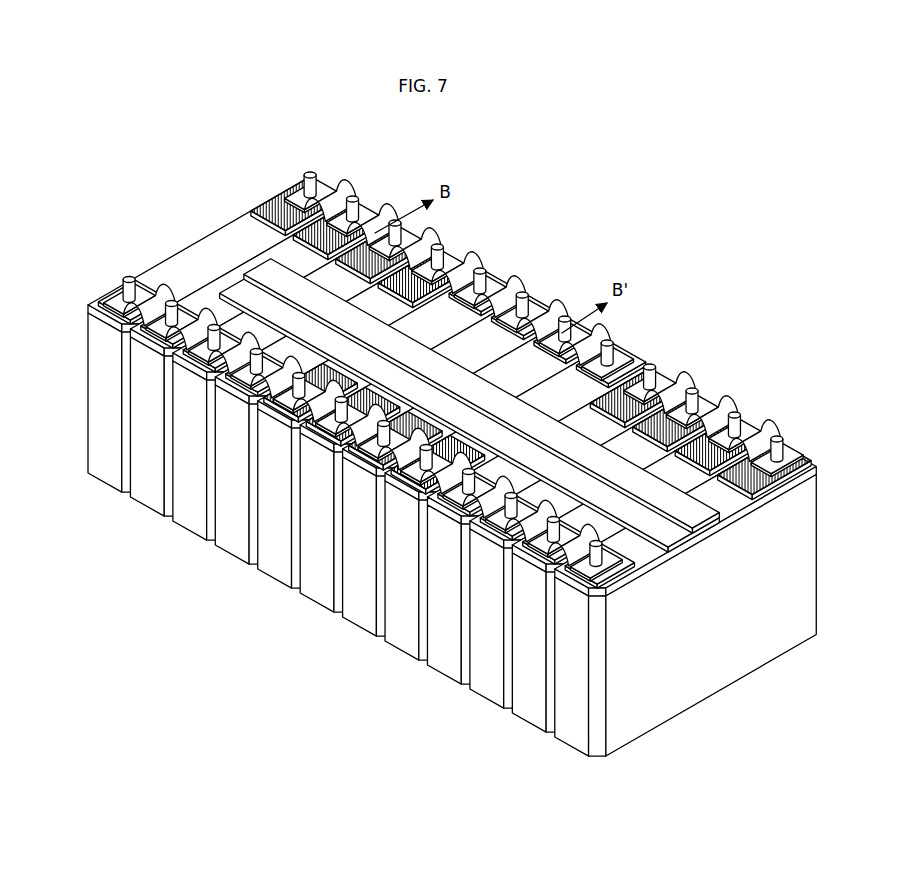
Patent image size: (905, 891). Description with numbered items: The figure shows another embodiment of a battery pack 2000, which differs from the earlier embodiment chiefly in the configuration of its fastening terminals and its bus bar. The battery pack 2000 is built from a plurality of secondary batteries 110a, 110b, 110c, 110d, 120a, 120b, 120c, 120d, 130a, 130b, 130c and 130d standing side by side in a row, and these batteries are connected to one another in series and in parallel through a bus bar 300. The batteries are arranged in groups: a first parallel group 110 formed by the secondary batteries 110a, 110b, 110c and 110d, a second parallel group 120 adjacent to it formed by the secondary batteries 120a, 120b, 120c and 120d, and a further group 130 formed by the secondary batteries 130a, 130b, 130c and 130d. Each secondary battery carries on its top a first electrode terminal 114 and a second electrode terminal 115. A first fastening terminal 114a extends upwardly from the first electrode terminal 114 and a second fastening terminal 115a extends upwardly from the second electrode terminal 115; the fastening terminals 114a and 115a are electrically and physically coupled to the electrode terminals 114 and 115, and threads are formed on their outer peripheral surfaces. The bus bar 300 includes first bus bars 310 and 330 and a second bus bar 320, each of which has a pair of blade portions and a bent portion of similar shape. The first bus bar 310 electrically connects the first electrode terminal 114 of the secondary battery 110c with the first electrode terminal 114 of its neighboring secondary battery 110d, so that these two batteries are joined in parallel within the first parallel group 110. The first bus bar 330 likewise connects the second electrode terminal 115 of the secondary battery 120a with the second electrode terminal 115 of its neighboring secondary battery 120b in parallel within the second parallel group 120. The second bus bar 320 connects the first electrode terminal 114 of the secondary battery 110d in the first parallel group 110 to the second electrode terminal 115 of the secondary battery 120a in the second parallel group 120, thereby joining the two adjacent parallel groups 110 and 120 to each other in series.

The battery pack 2000 is at (423, 483).
The first parallel group 110 is at (253, 414).
The secondary battery 110a is at (105, 463).
The secondary battery 110b is at (148, 487).
The secondary battery 110c is at (190, 511).
The secondary battery 110d is at (334, 426).
The second parallel group 120 is at (423, 510).
The secondary battery 120a is at (275, 559).
The secondary battery 120b is at (318, 583).
The secondary battery 120c is at (360, 607).
The secondary battery 120d is at (504, 522).
The third parallel group 130 is at (595, 605).
The secondary battery 130a is at (445, 655).
The secondary battery 130b is at (487, 679).
The secondary battery 130c is at (530, 703).
The secondary battery 130d is at (677, 617).
The first electrode terminal 114 is at (150, 294).
The first fastening terminal 114a is at (124, 282).
The second electrode terminal 115 is at (327, 372).
The second fastening terminal 115a is at (306, 176).
The bus bar 300 is at (454, 372).
The first bus bar 310 is at (430, 236).
The second bus bar 320 is at (475, 262).
The first bus bar 330 is at (520, 283).